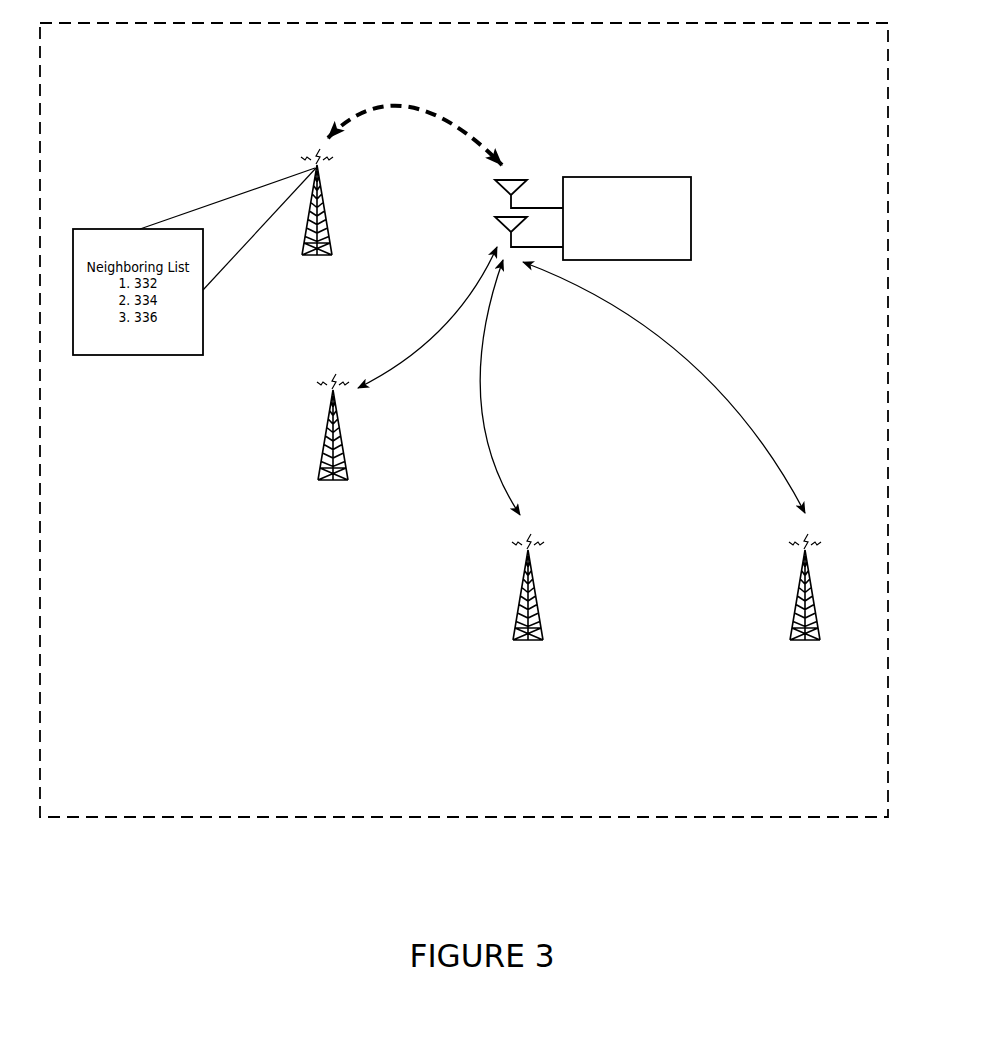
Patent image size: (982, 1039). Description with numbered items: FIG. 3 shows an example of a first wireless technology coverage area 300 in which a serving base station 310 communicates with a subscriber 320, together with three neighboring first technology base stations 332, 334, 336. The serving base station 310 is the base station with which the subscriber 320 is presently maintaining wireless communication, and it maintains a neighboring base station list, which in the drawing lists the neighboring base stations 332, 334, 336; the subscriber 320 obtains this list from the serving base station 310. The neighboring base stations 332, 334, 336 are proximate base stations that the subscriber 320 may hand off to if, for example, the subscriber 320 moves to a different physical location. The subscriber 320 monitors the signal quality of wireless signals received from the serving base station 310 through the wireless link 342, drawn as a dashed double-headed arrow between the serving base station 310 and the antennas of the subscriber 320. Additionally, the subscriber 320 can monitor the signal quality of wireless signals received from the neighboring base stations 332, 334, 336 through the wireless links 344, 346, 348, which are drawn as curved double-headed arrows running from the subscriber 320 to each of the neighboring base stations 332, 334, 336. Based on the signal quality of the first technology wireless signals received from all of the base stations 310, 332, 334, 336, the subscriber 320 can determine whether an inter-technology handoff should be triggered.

The first technology coverage area 300 is at (152, 192).
The serving base station 310 is at (306, 313).
The subscriber 320 is at (645, 254).
The neighboring base station 332 is at (322, 536).
The neighboring base station 334 is at (517, 695).
The neighboring base station 336 is at (794, 695).
The wireless link 342 is at (405, 102).
The wireless link 344 is at (447, 308).
The wireless link 346 is at (488, 403).
The wireless link 348 is at (692, 355).